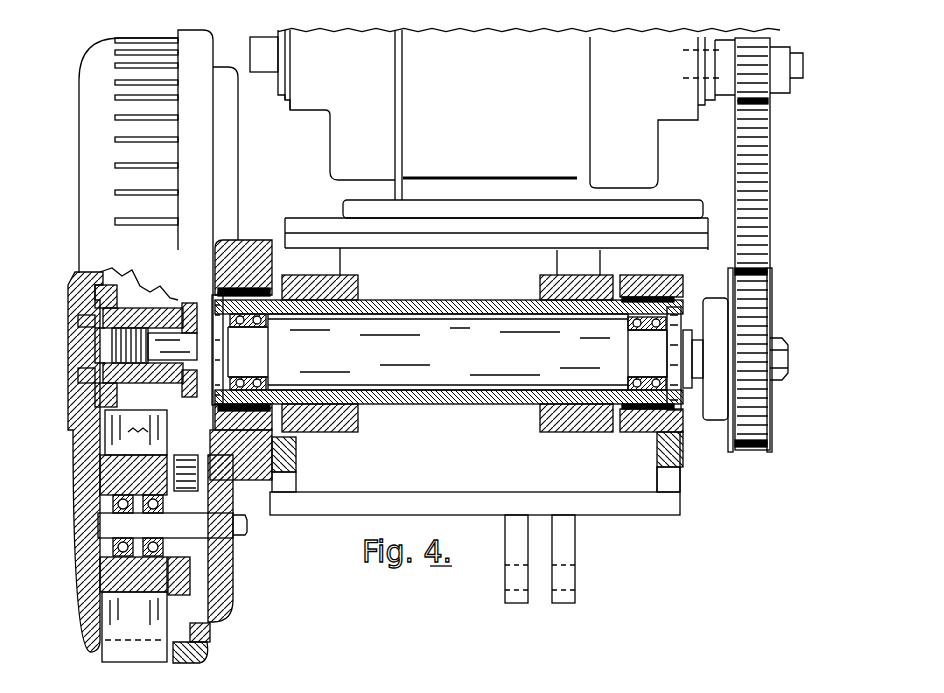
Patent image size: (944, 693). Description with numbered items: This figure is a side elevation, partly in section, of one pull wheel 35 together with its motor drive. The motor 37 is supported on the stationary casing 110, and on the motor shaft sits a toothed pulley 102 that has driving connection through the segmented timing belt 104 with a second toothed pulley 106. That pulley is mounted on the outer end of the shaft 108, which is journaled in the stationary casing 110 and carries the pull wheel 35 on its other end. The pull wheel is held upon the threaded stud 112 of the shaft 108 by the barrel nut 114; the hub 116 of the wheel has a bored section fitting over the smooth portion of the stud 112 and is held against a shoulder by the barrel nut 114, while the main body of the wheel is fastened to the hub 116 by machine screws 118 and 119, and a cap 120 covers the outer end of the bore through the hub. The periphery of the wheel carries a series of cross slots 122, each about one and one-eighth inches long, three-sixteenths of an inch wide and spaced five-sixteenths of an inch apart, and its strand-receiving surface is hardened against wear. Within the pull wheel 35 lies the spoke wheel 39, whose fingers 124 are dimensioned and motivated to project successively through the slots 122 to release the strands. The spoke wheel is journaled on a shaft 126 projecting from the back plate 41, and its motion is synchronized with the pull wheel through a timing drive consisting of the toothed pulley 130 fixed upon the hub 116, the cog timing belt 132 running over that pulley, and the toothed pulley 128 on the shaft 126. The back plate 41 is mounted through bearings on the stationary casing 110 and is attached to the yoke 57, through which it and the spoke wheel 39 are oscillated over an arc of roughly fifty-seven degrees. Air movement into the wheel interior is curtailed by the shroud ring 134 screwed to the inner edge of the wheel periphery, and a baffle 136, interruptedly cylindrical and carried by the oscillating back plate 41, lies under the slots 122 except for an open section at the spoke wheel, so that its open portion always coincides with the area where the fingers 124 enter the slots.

The pull wheel 35 is at (80, 78).
The peripheral cross slots 122 is at (118, 82).
The back plate 41 is at (240, 137).
The motor 37 is at (657, 172).
The toothed pulley 102 is at (770, 103).
The segmented timing belt 104 is at (772, 196).
The toothed pulley 106 is at (773, 274).
The shaft 108 is at (497, 392).
The stationary casing 110 is at (396, 408).
The threaded stud 112 is at (150, 340).
The hub 116 is at (140, 332).
The cap 120 is at (66, 303).
The machine screw 119 is at (78, 322).
The barrel nut 114 is at (85, 352).
The machine screw 118 is at (78, 375).
The spoke wheel 39 is at (106, 475).
The toothed pulley 130 is at (224, 466).
The cog timing belt 132 is at (212, 495).
The shaft 126 is at (232, 546).
The toothed pulley 128 is at (230, 572).
The baffle 136 is at (212, 614).
The shroud ring 134 is at (200, 648).
The finger 124 is at (152, 663).
The yoke 57 is at (630, 518).